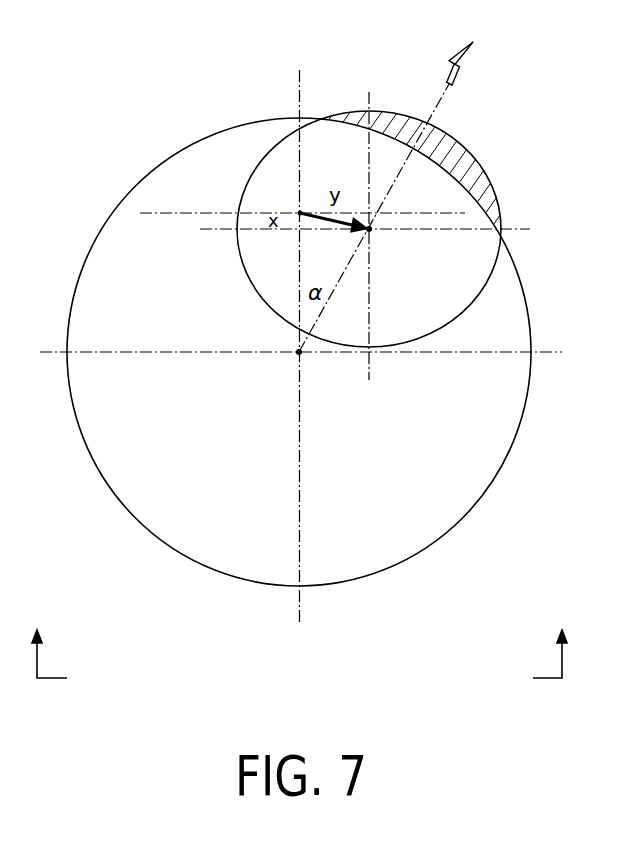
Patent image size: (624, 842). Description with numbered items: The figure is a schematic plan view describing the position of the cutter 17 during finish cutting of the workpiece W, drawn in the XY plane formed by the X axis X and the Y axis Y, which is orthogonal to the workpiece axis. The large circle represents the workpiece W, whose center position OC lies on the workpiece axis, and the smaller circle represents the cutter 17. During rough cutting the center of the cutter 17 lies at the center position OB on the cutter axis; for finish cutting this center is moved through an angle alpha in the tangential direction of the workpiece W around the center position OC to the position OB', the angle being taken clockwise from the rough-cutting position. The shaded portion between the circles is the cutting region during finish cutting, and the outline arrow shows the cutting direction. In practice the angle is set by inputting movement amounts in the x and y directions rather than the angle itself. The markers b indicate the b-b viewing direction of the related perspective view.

The workpiece W is at (86, 262).
The cutter 17 is at (492, 280).
The X axis X is at (299, 333).
The Y axis Y is at (312, 354).
The center position of the workpiece OC is at (314, 368).
The center position of the cutter during rough cutting OB is at (283, 201).
The center position of the cutter during finish cutting OB' is at (385, 244).
The b-b direction b is at (299, 639).